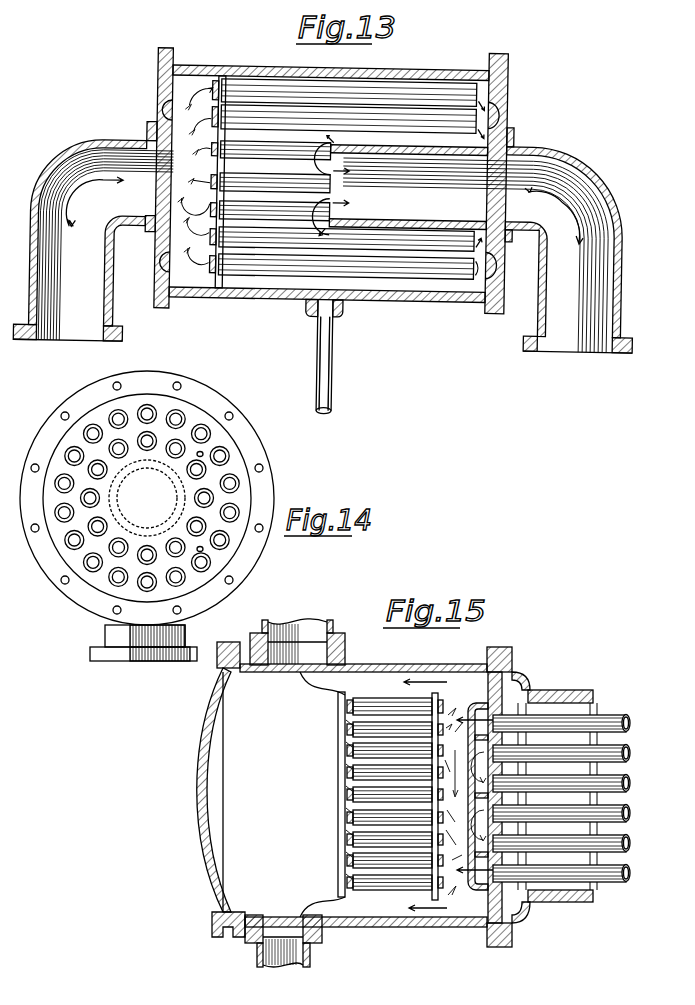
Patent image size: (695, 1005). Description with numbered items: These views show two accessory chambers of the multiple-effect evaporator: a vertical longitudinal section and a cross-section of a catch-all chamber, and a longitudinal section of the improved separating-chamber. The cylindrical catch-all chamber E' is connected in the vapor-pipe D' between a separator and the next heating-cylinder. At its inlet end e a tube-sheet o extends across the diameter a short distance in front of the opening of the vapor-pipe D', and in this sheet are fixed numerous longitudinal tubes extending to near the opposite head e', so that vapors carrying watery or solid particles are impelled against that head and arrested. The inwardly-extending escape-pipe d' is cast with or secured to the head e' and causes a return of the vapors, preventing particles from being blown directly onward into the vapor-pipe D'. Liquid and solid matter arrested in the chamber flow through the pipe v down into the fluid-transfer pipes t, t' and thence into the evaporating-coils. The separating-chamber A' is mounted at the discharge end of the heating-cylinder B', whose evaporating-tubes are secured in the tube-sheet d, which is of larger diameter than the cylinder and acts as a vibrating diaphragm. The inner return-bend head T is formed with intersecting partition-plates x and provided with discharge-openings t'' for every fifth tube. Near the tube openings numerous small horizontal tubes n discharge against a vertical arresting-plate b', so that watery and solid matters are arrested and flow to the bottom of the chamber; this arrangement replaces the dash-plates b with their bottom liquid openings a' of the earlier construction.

In FIG. 13, the catch-all chamber E' is at (329, 184).
In FIG. 14, the catch-all chamber E' is at (147, 498).
In FIG. 13, the inlet end e is at (155, 177).
In FIG. 13, the opposite head e' is at (506, 184).
In FIG. 13, the dash-plate b is at (351, 179).
In FIG. 14, the dash-plate b is at (147, 498).
In FIG. 13, the tube-sheet o is at (213, 248).
In FIG. 14, the tube-sheet o is at (198, 502).
In FIG. 13, the escape-pipe d' is at (400, 186).
In FIG. 13, the vapor-pipe D' is at (324, 245).
In FIG. 14, the vapor-pipe D' is at (143, 653).
In FIG. 15, the vapor-pipe D' is at (295, 787).
In FIG. 13, the pipe v is at (331, 357).
In FIG. 15, the separating-chamber A' is at (342, 789).
In FIG. 15, the small horizontal tubes n is at (396, 795).
In FIG. 15, the arresting-plate b' is at (332, 794).
In FIG. 15, the inner return-bend head T is at (448, 796).
In FIG. 15, the discharge-opening t'' is at (459, 714).
In FIG. 15, the liquid discharge and transfer pipe t' is at (471, 799).
In FIG. 15, the liquid discharge and transfer pipe t is at (456, 889).
In FIG. 15, the partition-plate x is at (478, 796).
In FIG. 15, the tube-sheet d is at (542, 797).
In FIG. 15, the heating-cylinder B' is at (561, 778).
In FIG. 15, the opening a' is at (379, 794).